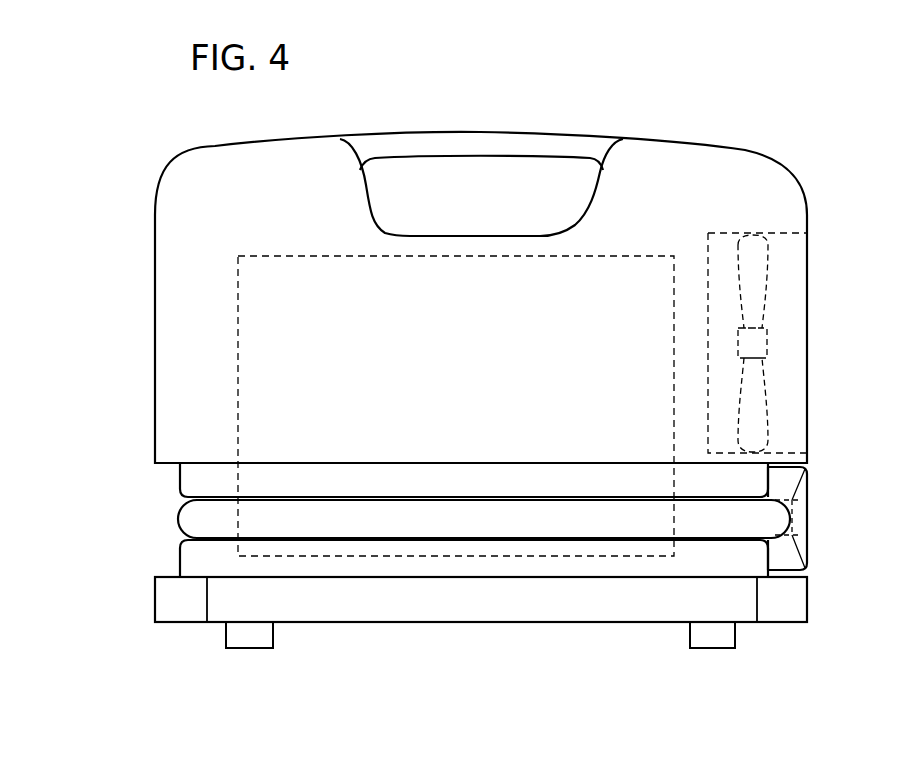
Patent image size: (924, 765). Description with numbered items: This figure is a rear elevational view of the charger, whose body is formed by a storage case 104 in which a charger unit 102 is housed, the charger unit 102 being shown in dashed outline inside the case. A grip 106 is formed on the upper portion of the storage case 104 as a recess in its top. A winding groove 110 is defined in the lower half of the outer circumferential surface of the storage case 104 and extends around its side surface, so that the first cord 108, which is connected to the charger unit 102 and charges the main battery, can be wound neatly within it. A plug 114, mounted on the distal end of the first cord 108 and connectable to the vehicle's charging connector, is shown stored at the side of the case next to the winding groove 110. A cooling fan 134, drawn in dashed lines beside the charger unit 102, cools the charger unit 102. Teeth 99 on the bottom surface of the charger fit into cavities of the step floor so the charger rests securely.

The teeth 99 is at (248, 637).
The charger unit 102 is at (626, 275).
The storage case 104 is at (237, 170).
The grip 106 is at (462, 145).
The first cord 108 is at (583, 517).
The winding groove 110 is at (170, 531).
The plug 114 is at (800, 495).
The cooling fan 134 is at (753, 281).